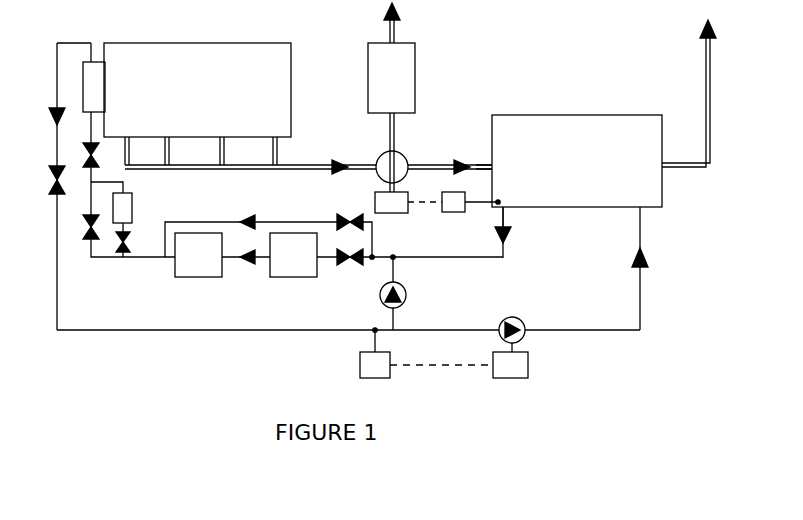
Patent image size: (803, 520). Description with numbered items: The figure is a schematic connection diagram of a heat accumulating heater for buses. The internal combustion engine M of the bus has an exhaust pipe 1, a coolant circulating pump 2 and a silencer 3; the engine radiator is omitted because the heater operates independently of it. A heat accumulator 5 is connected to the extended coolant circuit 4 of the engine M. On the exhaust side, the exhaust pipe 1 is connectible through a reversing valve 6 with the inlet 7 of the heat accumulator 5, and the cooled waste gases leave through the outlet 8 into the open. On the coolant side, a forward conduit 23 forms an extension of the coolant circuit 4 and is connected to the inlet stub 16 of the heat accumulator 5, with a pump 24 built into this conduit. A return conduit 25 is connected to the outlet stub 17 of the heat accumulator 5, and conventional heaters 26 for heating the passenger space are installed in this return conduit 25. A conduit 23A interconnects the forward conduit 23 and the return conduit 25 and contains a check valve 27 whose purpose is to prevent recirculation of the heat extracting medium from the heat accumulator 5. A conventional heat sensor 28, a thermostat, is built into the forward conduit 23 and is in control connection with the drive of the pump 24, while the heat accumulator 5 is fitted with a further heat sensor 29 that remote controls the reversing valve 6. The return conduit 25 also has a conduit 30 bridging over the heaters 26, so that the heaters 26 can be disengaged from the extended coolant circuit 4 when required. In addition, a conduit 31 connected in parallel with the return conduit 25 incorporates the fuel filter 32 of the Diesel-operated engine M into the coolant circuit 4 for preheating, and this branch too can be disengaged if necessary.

The internal combustion engine M is at (212, 56).
The exhaust pipe 1 is at (300, 165).
The coolant circulating pump 2 is at (88, 92).
The silencer 3 is at (407, 72).
The extended coolant circuit 4 is at (81, 43).
The heat accumulator 5 is at (600, 122).
The reversing valve 6 is at (375, 178).
The inlet 7 is at (492, 164).
The outlet 8 is at (665, 163).
The inlet stub 16 is at (640, 210).
The outlet stub 17 is at (520, 208).
The forward conduit 23 is at (575, 332).
The interconnecting conduit 23A is at (395, 320).
The pump 24 is at (512, 317).
The return conduit 25 is at (91, 249).
The heaters 26 is at (256, 255).
The check valve 27 is at (386, 287).
The heat sensor 28 is at (360, 368).
The heat sensor 29 is at (448, 212).
The bridging conduit 30 is at (314, 222).
The parallel conduit 31 is at (98, 181).
The fuel filter 32 is at (132, 210).